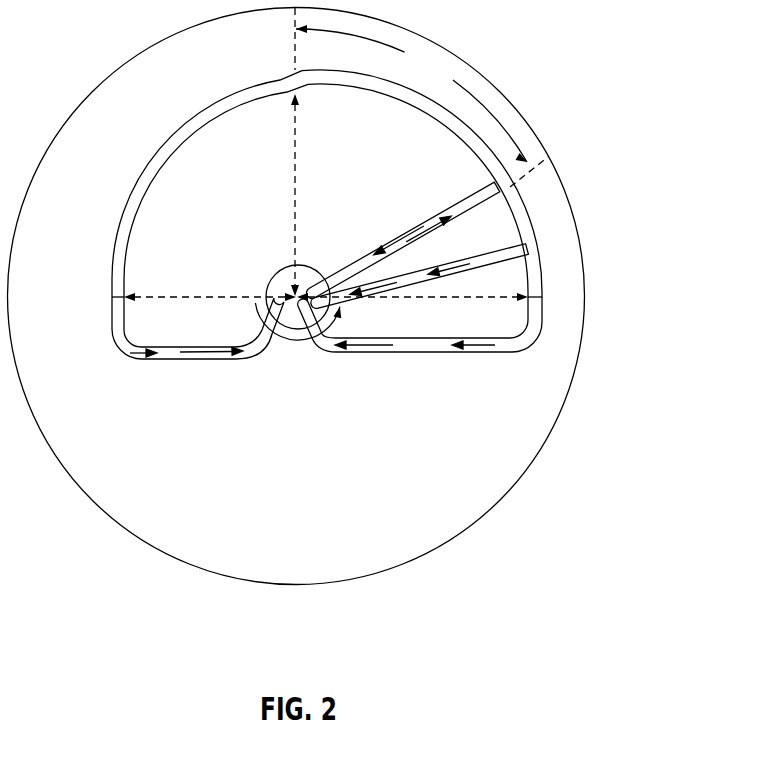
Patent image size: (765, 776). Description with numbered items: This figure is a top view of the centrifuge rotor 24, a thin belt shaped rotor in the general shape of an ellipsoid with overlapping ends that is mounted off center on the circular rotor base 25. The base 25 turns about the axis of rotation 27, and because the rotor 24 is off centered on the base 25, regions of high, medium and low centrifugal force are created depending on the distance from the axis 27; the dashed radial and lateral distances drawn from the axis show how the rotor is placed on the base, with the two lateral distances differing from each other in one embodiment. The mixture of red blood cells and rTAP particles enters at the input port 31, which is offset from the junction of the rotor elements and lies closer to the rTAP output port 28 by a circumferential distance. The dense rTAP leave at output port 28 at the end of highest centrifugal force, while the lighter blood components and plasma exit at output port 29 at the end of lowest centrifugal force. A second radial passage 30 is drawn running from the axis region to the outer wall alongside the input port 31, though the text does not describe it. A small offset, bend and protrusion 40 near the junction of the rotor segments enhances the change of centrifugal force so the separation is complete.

The rotor 24 is at (84, 49).
The rotor base 25 is at (147, 523).
The axis of rotation 27 is at (275, 266).
The rTAP output port 28 is at (533, 322).
The plasma output port 29 is at (113, 318).
The lower radial strut 30 is at (422, 269).
The input port 31 is at (480, 203).
The offset 40 is at (281, 74).